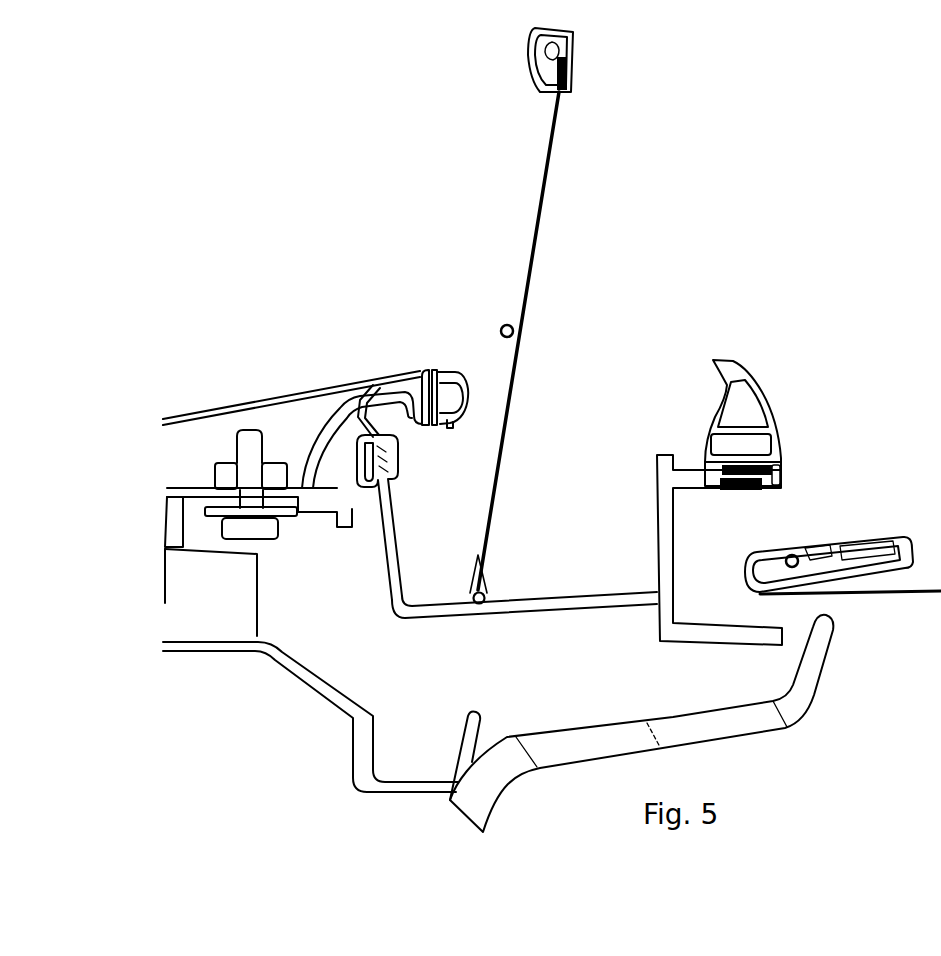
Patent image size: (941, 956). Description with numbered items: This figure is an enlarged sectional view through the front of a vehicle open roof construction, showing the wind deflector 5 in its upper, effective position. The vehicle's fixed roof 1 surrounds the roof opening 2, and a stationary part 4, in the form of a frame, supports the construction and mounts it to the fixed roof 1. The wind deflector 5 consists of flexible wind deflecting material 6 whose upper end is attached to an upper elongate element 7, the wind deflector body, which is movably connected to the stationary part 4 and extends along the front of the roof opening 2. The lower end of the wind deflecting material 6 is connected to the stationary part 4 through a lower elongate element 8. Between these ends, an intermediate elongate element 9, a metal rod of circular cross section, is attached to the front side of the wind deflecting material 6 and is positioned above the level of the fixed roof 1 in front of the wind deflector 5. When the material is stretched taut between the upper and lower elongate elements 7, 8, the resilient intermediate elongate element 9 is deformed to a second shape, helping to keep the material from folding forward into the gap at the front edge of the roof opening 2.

The fixed roof 1 is at (207, 410).
The roof opening 2 is at (481, 394).
The stationary part 4 is at (388, 580).
The wind deflector 5 is at (488, 215).
The flexible wind deflecting material 6 is at (552, 161).
The upper elongate element 7 is at (577, 57).
The lower elongate element 8 is at (478, 604).
The intermediate elongate element 9 is at (514, 333).